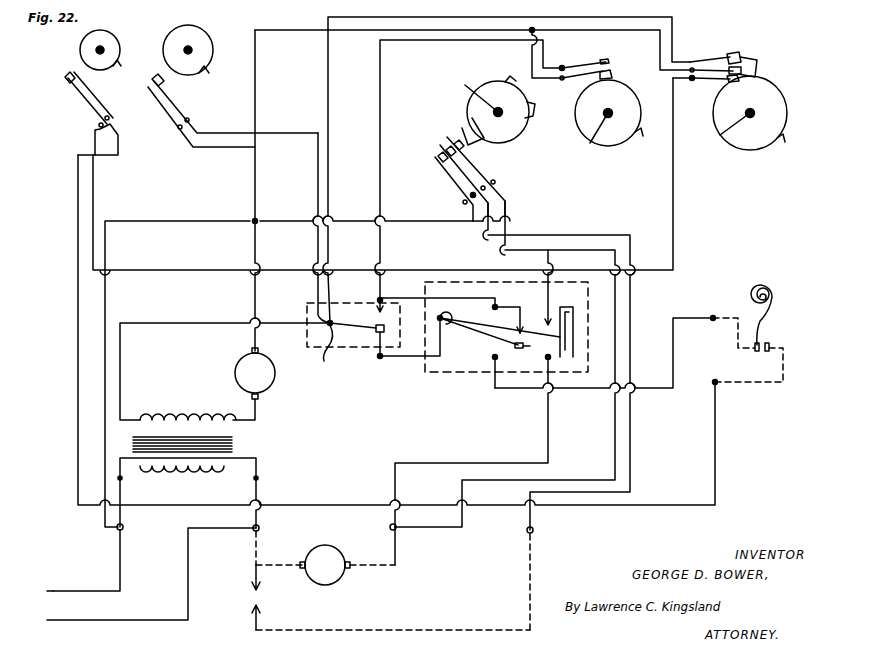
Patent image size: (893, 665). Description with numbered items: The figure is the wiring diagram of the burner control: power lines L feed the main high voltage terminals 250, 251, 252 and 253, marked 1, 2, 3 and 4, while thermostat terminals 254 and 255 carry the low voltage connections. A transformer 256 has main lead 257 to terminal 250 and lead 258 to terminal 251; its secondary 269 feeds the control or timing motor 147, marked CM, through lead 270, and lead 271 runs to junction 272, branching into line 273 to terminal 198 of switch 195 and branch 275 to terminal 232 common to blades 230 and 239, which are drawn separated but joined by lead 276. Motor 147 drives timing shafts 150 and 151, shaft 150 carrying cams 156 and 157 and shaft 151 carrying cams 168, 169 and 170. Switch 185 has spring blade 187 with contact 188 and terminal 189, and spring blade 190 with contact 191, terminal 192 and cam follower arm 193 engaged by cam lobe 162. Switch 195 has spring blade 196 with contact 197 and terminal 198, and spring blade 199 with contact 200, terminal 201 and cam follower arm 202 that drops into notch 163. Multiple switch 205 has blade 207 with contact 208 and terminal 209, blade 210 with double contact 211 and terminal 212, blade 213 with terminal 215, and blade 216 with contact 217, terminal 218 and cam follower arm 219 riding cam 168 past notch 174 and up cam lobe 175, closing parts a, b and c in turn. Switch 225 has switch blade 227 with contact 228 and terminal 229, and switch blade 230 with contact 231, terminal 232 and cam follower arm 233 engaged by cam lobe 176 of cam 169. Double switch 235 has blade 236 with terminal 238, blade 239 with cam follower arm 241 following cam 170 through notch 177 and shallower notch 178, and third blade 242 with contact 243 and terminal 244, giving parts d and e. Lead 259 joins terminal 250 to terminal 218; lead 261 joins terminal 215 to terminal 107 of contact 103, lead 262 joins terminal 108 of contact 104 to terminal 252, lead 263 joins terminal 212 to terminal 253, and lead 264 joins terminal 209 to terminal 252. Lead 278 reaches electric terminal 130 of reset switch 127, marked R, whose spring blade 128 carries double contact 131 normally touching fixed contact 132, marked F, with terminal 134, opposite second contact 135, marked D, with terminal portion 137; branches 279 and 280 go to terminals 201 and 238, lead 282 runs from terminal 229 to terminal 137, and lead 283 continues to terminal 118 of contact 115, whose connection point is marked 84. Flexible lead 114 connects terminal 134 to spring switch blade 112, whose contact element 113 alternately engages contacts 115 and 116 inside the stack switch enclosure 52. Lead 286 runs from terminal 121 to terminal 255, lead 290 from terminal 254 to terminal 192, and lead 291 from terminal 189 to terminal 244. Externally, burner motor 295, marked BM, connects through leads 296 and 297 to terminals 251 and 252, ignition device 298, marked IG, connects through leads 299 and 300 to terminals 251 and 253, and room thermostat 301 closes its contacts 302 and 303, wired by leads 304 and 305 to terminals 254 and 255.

The terminal 1 is at (93, 552).
The terminal 2 is at (261, 523).
The terminal 3 is at (399, 521).
The terminal 4 is at (537, 527).
The switch unit 52 is at (594, 303).
The contact 84 is at (521, 326).
The contact bracket 103 is at (575, 311).
The contact 104 is at (576, 338).
The conductor arrow 107 is at (551, 300).
The conductor 108 is at (552, 376).
The switch blade 112 is at (482, 331).
The contact 113 is at (526, 350).
The pivot 114 is at (454, 315).
The blade tip 115 is at (527, 332).
The conductor 116 is at (495, 388).
The conductor 118 is at (495, 305).
The junction 121 is at (492, 357).
The relay switch 127 is at (312, 338).
The switch blade 128 is at (352, 331).
The blade pivot 130 is at (329, 343).
The contact 131 is at (386, 326).
The conductor 132 is at (378, 332).
The conductor 134 is at (382, 356).
The contact D 135 is at (372, 313).
The conductor 137 is at (383, 296).
The motor terminal 147 is at (264, 386).
The cam shaft 150 is at (98, 49).
The cam shaft 151 is at (590, 117).
The cam 156 is at (112, 34).
The cam 157 is at (208, 30).
The cam notch 162 is at (117, 68).
The cam notch 163 is at (212, 68).
The cam 168 is at (520, 130).
The cam 169 is at (612, 146).
The cam 170 is at (750, 150).
The cam lobe 174 is at (538, 118).
The cam lobe 175 is at (498, 80).
The cam lobe 176 is at (645, 134).
The cam lobe 177 is at (779, 142).
The cam lobe 178 is at (784, 130).
The switch arm 185 is at (95, 122).
The switch arm 187 is at (92, 102).
The contact 188 is at (68, 82).
The switch block 189 is at (99, 139).
The switch lever 190 is at (97, 93).
The cam follower 191 is at (83, 77).
The pivot 192 is at (117, 118).
The cam follower 193 is at (80, 64).
The switch arm 195 is at (196, 108).
The switch arm 196 is at (169, 101).
The contact 197 is at (154, 76).
The switch lever 198 is at (178, 131).
The switch lever 199 is at (179, 97).
The cam follower 200 is at (163, 72).
The pivot 201 is at (193, 119).
The cam follower 202 is at (158, 69).
The switch blade 205 is at (486, 178).
The switch blade 207 is at (458, 186).
The contact 208 is at (446, 166).
The pivot 209 is at (463, 203).
The switch blade 210 is at (458, 172).
The contact 211 is at (440, 162).
The pivot 212 is at (476, 196).
The contact 213 is at (537, 159).
The pivot 215 is at (486, 188).
The contact 216 is at (470, 149).
The cam follower 217 is at (486, 131).
The pivot 218 is at (496, 182).
The cam follower arm 219 is at (457, 127).
The switch blade 225 is at (584, 63).
The switch blade 227 is at (604, 57).
The contact 228 is at (612, 64).
The junction 229 is at (563, 65).
The cam 230 is at (609, 113).
The cam follower 231 is at (607, 80).
The pivot 232 is at (574, 80).
The cam follower 233 is at (616, 78).
The contact 235 is at (756, 58).
The contact 236 is at (736, 53).
The junction 238 is at (680, 60).
The switch blade 239 is at (713, 58).
The switch blade 241 is at (758, 73).
The cam 242 is at (750, 113).
The cam follower 243 is at (728, 82).
The junction 244 is at (692, 80).
The terminal 250 is at (125, 531).
The terminal 251 is at (260, 533).
The terminal 252 is at (397, 531).
The terminal 253 is at (534, 533).
The junction 254 is at (717, 386).
The junction 255 is at (713, 322).
The transformer core 256 is at (238, 440).
The primary winding 257 is at (138, 512).
The conductor 258 is at (250, 520).
The conductor 259 is at (148, 222).
The conductor 261 is at (488, 252).
The conductor 262 is at (550, 437).
The conductor 263 is at (562, 234).
The conductor 264 is at (632, 331).
The relay coil 269 is at (186, 416).
The conductor 270 is at (262, 419).
The conductor 271 is at (253, 338).
The conductor 272 is at (258, 150).
The conductor 273 is at (226, 148).
The conductor 275 is at (372, 32).
The conductor 276 is at (531, 50).
The conductor 278 is at (122, 396).
The conductor 279 is at (316, 284).
The conductor 280 is at (326, 47).
The conductor 282 is at (408, 42).
The conductor 283 is at (438, 282).
The conductor 286 is at (533, 394).
The conductor 290 is at (76, 318).
The conductor 291 is at (675, 173).
The blower motor 295 is at (340, 580).
The conductor 296 is at (274, 569).
The conductor 297 is at (393, 548).
The conductor 298 is at (284, 629).
The ignition arrow 299 is at (249, 584).
The conductor 300 is at (414, 629).
The thermostat coil 301 is at (768, 297).
The contact 302 is at (769, 345).
The contact 303 is at (764, 340).
The conductor 304 is at (782, 384).
The conductor 305 is at (728, 318).
The contact a is at (458, 141).
The contact b is at (446, 150).
The contact c is at (440, 159).
The contact d is at (748, 53).
The contact e is at (758, 66).
The relay R is at (353, 325).
The contact D is at (388, 312).
The contact F is at (384, 332).
The control motor CM is at (254, 384).
The blower motor BM is at (325, 565).
The ignition IG is at (262, 611).
The line L is at (98, 618).